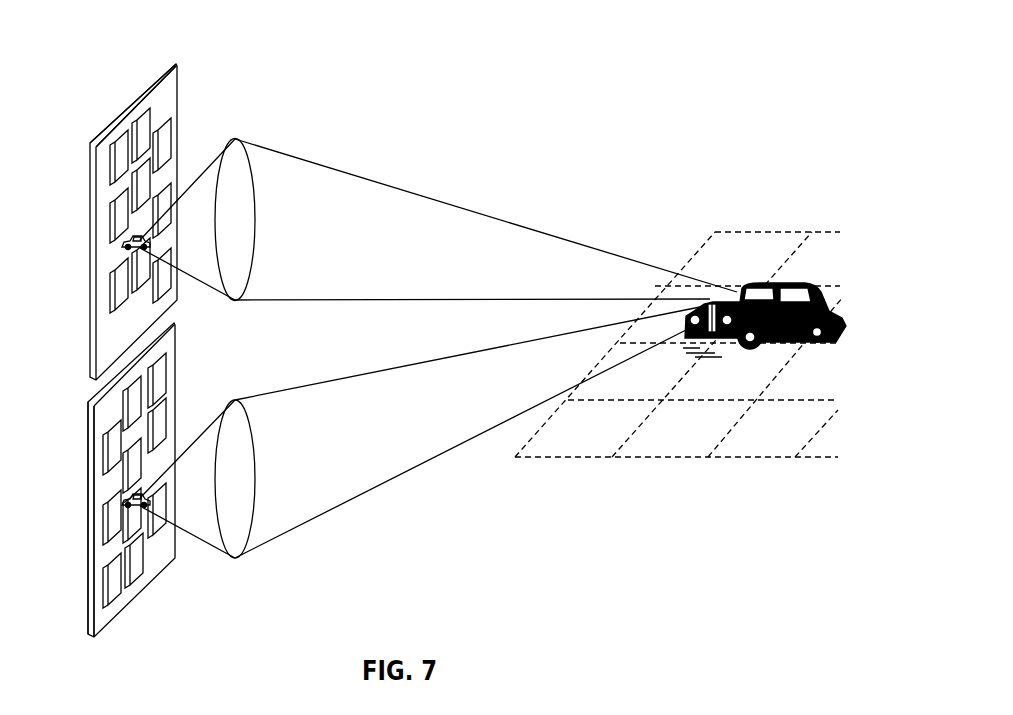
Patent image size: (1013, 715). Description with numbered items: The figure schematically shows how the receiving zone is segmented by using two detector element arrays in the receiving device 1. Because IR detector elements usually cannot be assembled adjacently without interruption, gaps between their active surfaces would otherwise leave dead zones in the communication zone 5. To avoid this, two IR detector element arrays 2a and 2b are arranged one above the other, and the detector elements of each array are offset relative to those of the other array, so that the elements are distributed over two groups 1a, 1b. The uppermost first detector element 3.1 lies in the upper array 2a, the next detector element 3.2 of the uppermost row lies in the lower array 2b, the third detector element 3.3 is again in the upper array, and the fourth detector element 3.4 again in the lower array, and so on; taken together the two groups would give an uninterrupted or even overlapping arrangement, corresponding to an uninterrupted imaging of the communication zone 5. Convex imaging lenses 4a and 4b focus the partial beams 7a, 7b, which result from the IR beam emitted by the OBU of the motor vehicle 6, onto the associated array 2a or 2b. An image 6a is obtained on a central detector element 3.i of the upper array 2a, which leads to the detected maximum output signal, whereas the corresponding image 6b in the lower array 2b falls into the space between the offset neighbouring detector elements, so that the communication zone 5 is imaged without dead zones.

The receiving device 1 is at (192, 53).
The upper array or group of detector elements 1a is at (157, 83).
The lower array or group of detector elements 1b is at (85, 488).
The upper IR detector element array 2a is at (148, 215).
The lower IR detector element array 2b is at (139, 480).
The first detector element 3.1 is at (116, 144).
The second detector element 3.2 is at (135, 398).
The third detector element 3.3 is at (150, 120).
The fourth detector element 3.4 is at (162, 372).
The central detector element 3.i is at (135, 250).
The convex imaging lens 4a is at (235, 192).
The convex imaging lens 4b is at (235, 445).
The communication zone 5 is at (755, 473).
The motor vehicle 6 is at (737, 291).
The image in the upper array 6a is at (148, 252).
The image in the lower array 6b is at (142, 507).
The partial beam 7a is at (462, 207).
The partial beam 7b is at (455, 452).